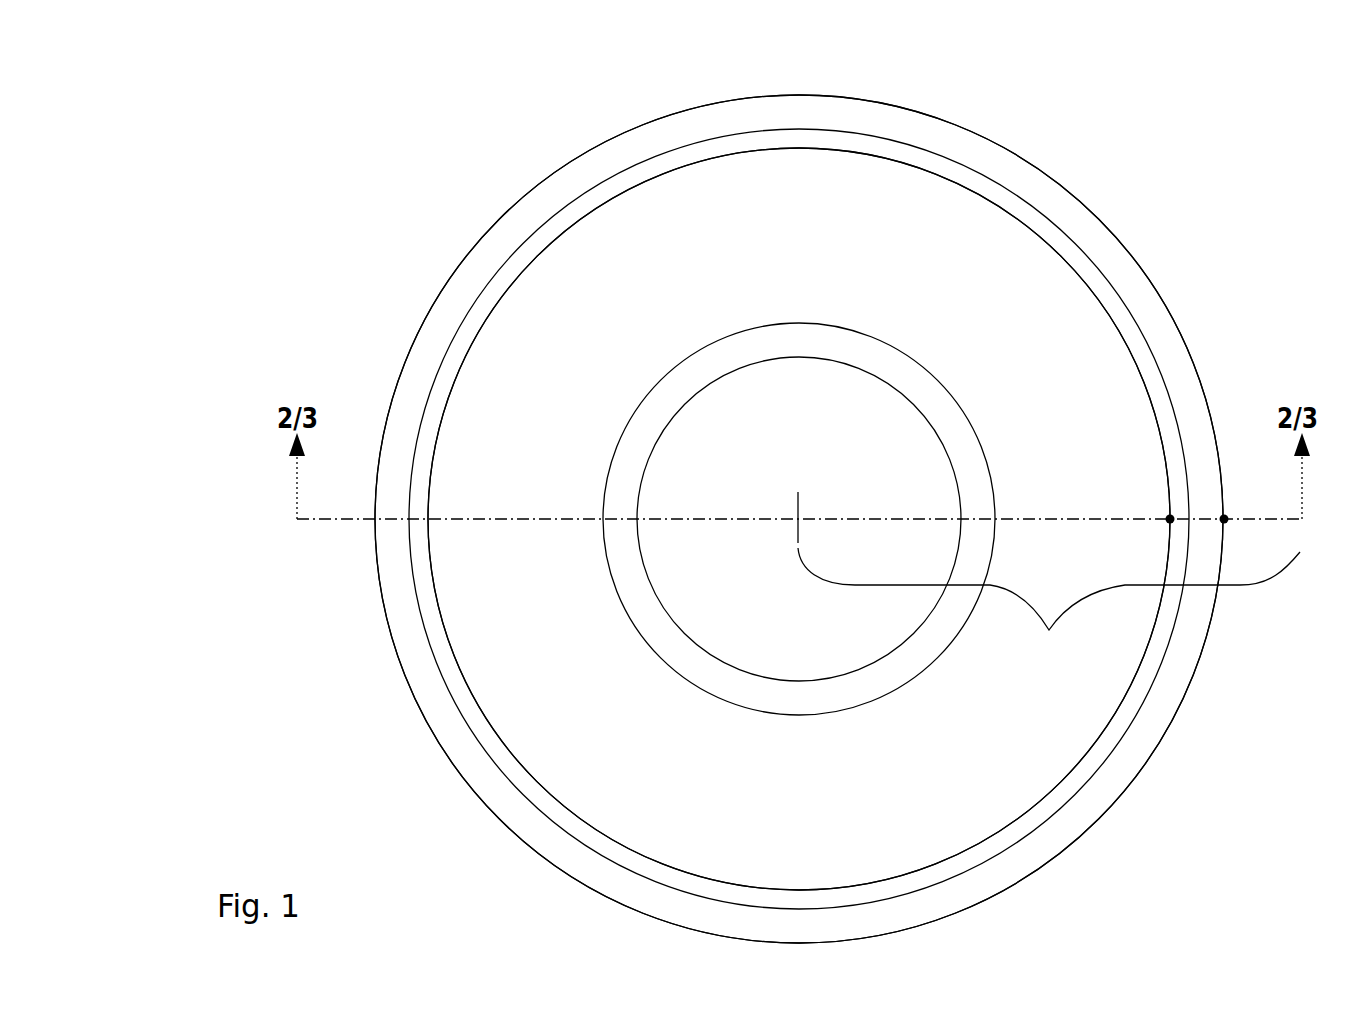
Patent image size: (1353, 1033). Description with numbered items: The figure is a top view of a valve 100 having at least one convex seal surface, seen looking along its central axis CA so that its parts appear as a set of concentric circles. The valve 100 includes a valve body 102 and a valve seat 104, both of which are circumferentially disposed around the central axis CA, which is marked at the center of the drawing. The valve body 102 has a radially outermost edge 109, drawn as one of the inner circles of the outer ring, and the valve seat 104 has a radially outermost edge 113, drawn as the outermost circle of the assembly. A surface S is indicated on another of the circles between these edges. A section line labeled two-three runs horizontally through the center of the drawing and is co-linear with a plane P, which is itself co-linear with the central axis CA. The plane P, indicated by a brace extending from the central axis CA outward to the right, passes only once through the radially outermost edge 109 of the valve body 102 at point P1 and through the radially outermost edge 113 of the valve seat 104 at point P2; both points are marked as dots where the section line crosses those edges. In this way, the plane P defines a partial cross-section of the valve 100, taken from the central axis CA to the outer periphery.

The valve 100 is at (1164, 94).
The valve body 102 is at (550, 236).
The valve seat 104 is at (1110, 219).
The radially outermost edge 109 is at (683, 165).
The radially outermost edge 113 is at (1183, 333).
The surface S is at (453, 337).
The central axis CA is at (798, 519).
The plane P is at (1049, 607).
The point P1 is at (1170, 519).
The point P2 is at (1224, 519).